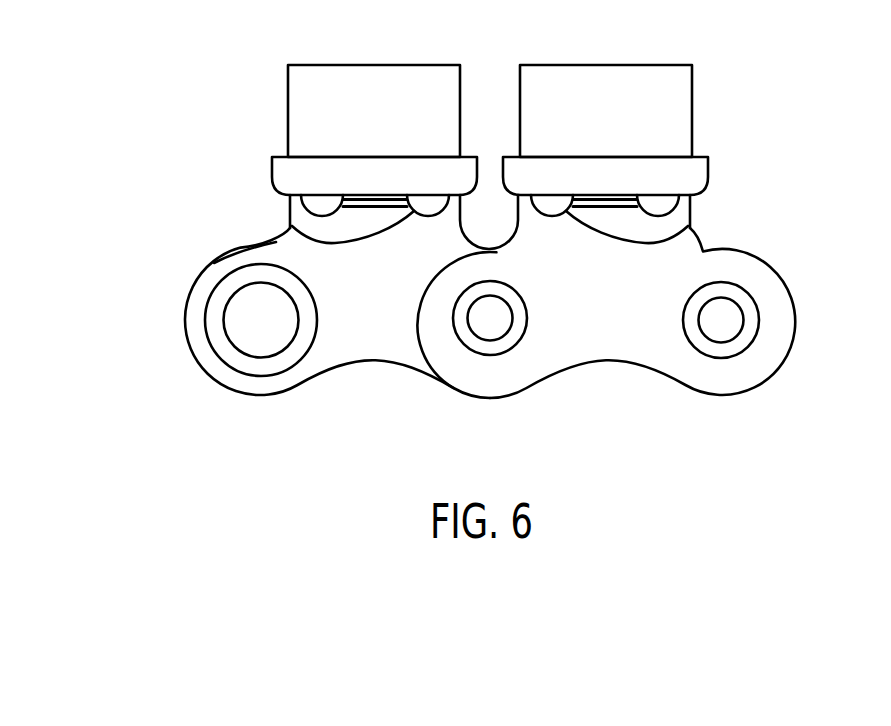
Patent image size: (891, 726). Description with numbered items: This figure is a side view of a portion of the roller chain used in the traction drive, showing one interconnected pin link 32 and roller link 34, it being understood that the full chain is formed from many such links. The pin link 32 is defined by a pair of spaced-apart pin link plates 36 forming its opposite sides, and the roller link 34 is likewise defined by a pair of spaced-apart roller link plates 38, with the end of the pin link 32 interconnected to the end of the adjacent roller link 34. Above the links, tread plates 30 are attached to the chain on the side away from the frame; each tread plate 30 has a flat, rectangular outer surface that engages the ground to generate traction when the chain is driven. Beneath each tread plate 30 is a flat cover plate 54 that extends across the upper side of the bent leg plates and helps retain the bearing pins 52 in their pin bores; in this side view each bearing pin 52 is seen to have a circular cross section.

The tread plate 30 is at (288, 94).
The cover plate 54 is at (272, 164).
The bearing pin 52 is at (292, 226).
The roller link plate 38 is at (386, 320).
The pin link plate 36 is at (632, 320).
The roller link 34 is at (205, 374).
The pin link 32 is at (747, 393).